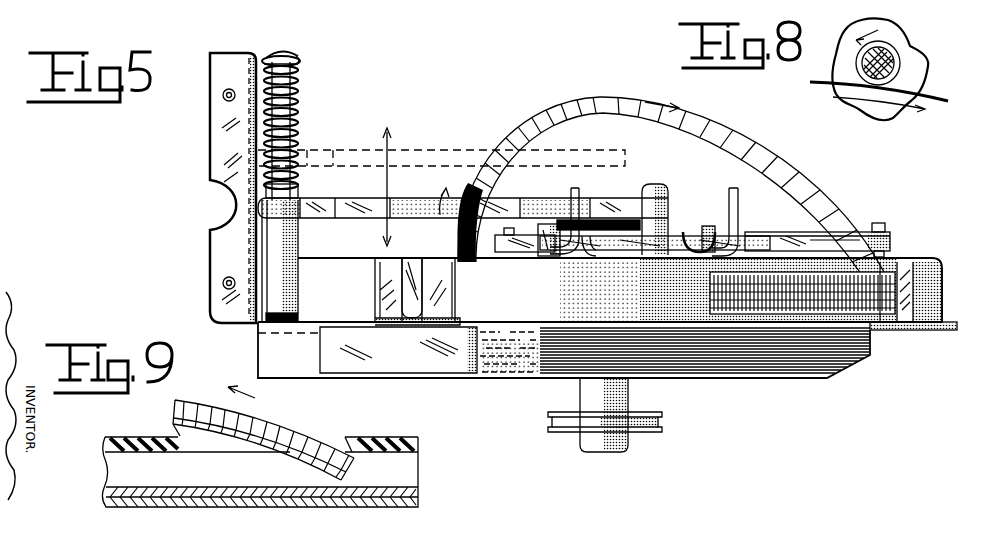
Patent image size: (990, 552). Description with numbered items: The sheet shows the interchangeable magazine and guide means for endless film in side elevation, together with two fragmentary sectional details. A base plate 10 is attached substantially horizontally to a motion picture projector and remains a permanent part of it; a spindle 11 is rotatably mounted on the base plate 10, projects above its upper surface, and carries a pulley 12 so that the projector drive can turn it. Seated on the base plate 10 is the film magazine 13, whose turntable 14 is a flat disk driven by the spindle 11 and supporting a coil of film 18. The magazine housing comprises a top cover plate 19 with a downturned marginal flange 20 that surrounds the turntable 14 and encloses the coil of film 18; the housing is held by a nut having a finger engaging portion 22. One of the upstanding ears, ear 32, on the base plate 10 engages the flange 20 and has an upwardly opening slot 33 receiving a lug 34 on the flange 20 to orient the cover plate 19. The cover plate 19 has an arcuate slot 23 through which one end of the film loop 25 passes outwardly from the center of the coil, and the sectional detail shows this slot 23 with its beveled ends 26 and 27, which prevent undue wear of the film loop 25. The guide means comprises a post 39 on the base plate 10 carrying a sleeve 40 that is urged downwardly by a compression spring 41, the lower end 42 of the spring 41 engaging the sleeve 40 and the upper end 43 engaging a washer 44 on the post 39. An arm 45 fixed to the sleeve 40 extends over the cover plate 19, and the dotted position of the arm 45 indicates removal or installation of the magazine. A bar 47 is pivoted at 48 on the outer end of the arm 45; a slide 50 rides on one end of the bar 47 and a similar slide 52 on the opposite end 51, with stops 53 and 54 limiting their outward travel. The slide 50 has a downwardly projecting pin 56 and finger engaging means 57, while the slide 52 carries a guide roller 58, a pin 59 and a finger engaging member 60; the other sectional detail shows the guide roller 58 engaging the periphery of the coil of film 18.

In FIG. 5, the base plate 10 is at (942, 340).
In FIG. 9, the base plate 10 is at (420, 496).
In FIG. 5, the spindle 11 is at (630, 400).
In FIG. 5, the pulley 12 is at (662, 428).
In FIG. 5, the film magazine 13 is at (941, 252).
In FIG. 9, the turntable 14 is at (420, 476).
In FIG. 5, the coil of film 18 is at (802, 293).
In FIG. 8, the coil of film 18 is at (943, 101).
In FIG. 9, the top cover plate 19 is at (418, 440).
In FIG. 5, the marginal flange 20 is at (944, 300).
In FIG. 5, the finger engaging portion 22 is at (592, 232).
In FIG. 9, the arcuate slot 23 is at (242, 450).
In FIG. 5, the film loop 25 is at (608, 93).
In FIG. 9, the film loop 25 is at (311, 423).
In FIG. 9, the beveled end 26 is at (372, 438).
In FIG. 9, the beveled end 27 is at (178, 436).
In FIG. 5, the upstanding ear 32 is at (380, 300).
In FIG. 5, the upwardly opening slot 33 is at (400, 277).
In FIG. 5, the lug 34 is at (412, 264).
In FIG. 5, the post 39 is at (280, 52).
In FIG. 5, the sleeve 40 is at (306, 256).
In FIG. 5, the compression spring 41 is at (296, 106).
In FIG. 5, the lower end of spring 42 is at (298, 190).
In FIG. 5, the upper end of spring 43 is at (296, 66).
In FIG. 5, the washer 44 is at (300, 58).
In FIG. 5, the arm 45 is at (402, 160).
In FIG. 5, the bar 47 is at (780, 226).
In FIG. 5, the pivot 48 is at (657, 183).
In FIG. 5, the slide 50 is at (542, 258).
In FIG. 5, the end of bar 51 is at (846, 232).
In FIG. 5, the slide 52 is at (709, 228).
In FIG. 5, the stop 53 is at (507, 258).
In FIG. 5, the stop 54 is at (880, 222).
In FIG. 5, the pin 56 is at (593, 258).
In FIG. 5, the finger engaging means 57 is at (572, 195).
In FIG. 8, the guide roller 58 is at (888, 68).
In FIG. 5, the pin 59 is at (687, 232).
In FIG. 5, the finger engaging member 60 is at (732, 190).